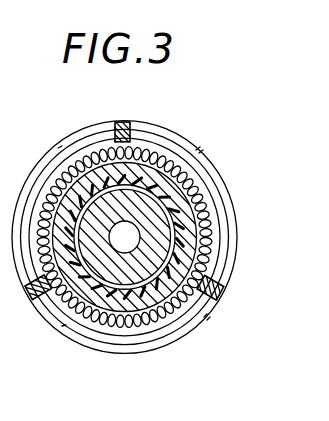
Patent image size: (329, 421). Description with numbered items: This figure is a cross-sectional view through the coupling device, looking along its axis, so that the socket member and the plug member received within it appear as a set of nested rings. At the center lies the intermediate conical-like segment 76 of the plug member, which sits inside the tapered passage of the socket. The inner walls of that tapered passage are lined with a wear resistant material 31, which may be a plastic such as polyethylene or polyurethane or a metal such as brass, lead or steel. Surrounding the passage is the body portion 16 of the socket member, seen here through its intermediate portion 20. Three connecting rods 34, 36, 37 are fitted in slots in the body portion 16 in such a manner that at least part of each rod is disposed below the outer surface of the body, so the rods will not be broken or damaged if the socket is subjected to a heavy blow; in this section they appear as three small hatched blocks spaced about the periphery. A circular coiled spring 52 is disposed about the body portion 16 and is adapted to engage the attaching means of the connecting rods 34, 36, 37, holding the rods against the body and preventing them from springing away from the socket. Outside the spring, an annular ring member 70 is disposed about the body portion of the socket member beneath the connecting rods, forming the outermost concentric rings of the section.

The body portion 16 is at (212, 167).
The intermediate portion 20 is at (98, 167).
The wear resistant material 31 is at (98, 273).
The connecting rod 34 is at (122, 122).
The connecting rod 36 is at (221, 297).
The connecting rod 37 is at (29, 296).
The circular coiled spring 52 is at (172, 158).
The annular ring member 70 is at (138, 335).
The intermediate conical-like segment 76 is at (93, 215).